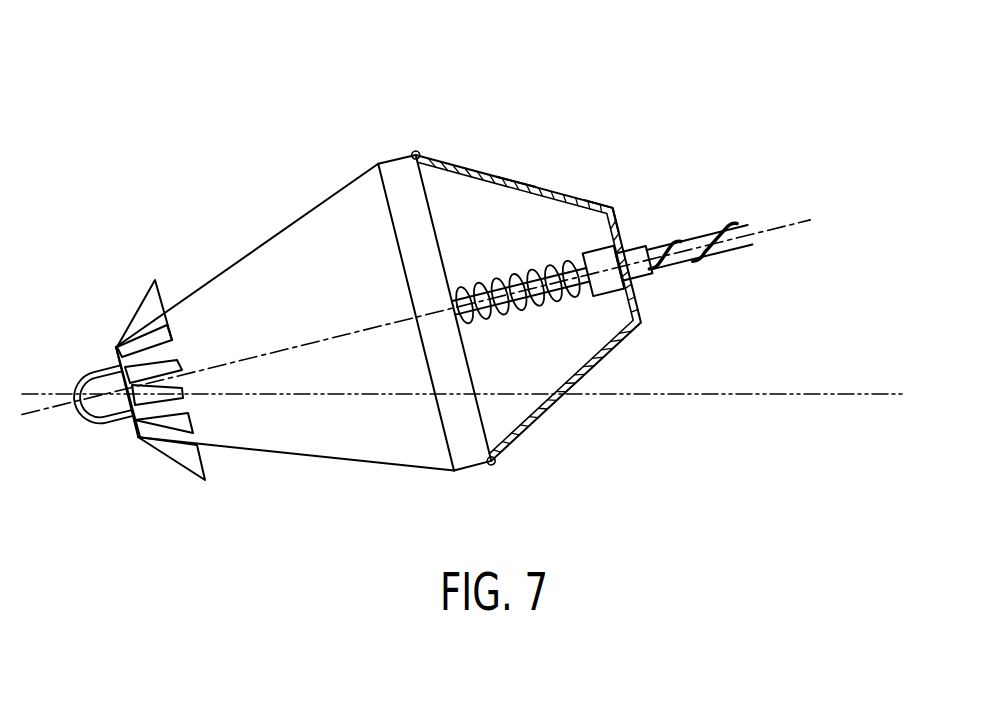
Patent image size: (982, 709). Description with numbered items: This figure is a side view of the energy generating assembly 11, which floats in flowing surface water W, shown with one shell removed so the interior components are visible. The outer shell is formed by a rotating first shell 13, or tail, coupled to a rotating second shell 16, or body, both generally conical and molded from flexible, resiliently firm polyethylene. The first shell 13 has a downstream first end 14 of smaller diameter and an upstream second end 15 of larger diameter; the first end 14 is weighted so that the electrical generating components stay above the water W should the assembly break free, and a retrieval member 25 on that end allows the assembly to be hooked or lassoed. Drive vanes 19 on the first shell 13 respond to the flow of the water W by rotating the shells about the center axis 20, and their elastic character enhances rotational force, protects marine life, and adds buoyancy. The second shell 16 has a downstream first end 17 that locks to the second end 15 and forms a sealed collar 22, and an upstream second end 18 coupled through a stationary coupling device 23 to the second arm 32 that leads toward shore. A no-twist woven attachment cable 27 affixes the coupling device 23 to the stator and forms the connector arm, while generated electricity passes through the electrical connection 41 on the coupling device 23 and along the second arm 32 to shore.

The energy generating assembly 11 is at (412, 279).
The first shell 13 is at (271, 353).
The first end of the first shell 14 is at (149, 316).
The second end of the first shell 15 is at (434, 313).
The second shell 16 is at (516, 181).
The first end of the second shell 17 is at (540, 286).
The second end of the second shell 18 is at (601, 215).
The drive vanes 19 is at (145, 340).
The center axis 20 is at (43, 418).
The collar 22 is at (453, 307).
The coupling device 23 is at (619, 267).
The retrieval member 25 is at (101, 396).
The attachment cable 27 is at (521, 291).
The second arm 32 is at (700, 247).
The electrical connection 41 is at (694, 248).
The water W is at (800, 394).